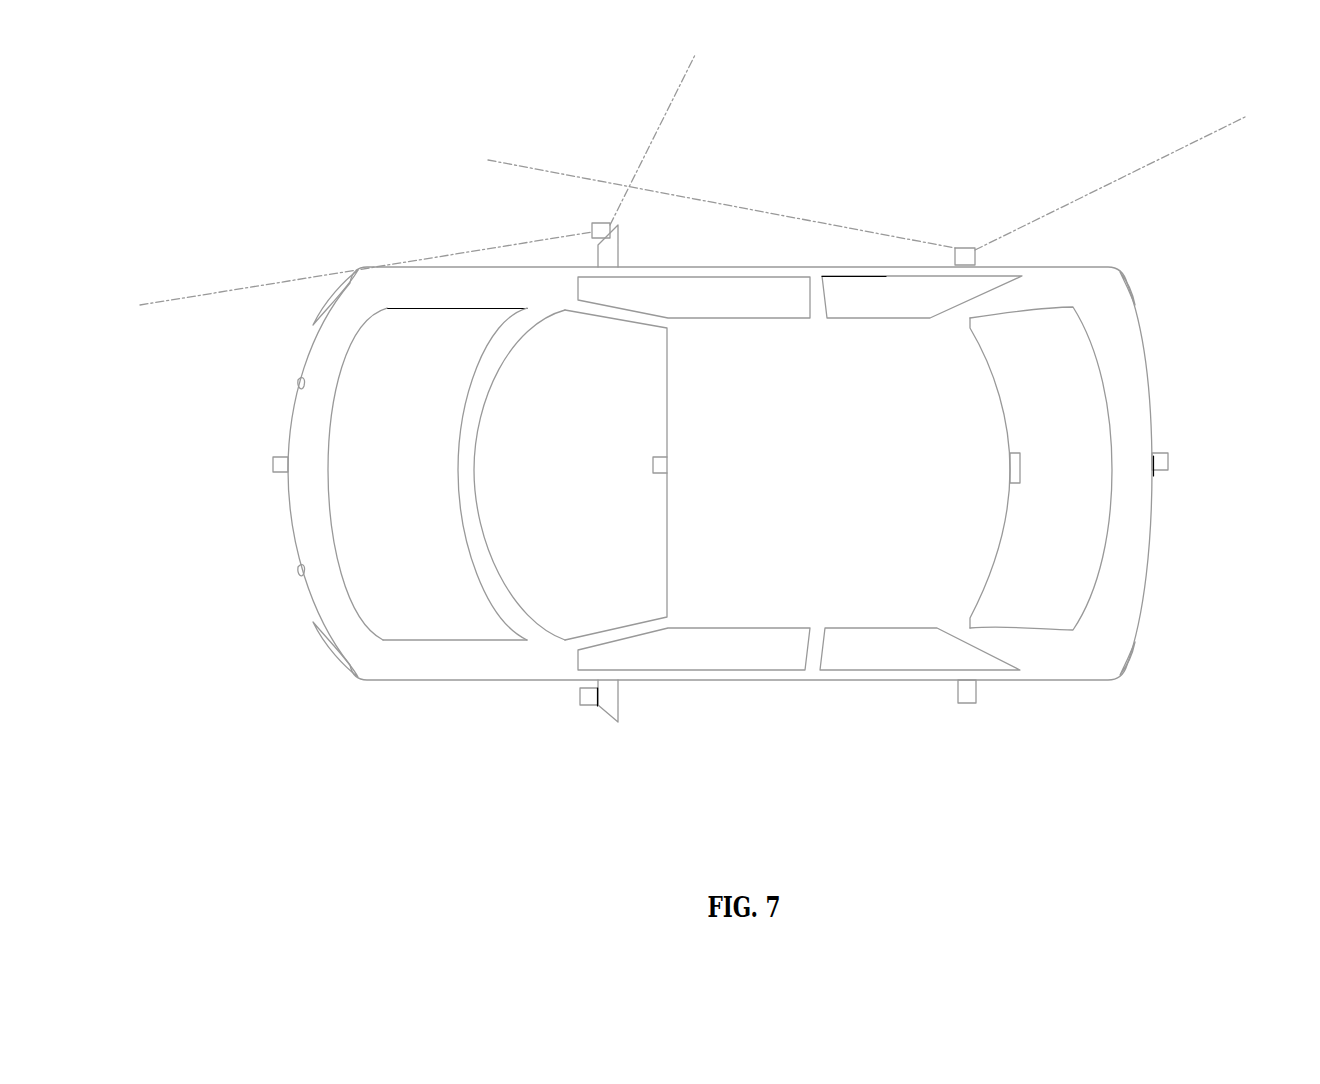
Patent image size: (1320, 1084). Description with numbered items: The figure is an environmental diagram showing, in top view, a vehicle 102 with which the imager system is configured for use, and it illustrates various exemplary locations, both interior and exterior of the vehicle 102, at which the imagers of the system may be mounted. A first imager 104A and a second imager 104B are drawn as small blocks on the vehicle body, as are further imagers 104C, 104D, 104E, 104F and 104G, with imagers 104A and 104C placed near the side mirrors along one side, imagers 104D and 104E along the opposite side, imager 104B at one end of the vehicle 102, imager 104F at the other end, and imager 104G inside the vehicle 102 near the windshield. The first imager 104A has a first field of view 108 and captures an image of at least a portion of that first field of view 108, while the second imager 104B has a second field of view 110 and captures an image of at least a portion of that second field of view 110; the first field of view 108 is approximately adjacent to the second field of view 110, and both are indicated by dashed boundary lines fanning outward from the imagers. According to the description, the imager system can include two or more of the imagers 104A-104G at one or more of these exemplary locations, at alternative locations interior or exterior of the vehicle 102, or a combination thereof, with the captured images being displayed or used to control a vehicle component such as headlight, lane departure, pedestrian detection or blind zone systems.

The vehicle 102 is at (810, 262).
The first imager 104A is at (950, 266).
The second imager 104B is at (1168, 462).
The imager 104C is at (592, 238).
The imager 104D is at (968, 703).
The imager 104E is at (582, 705).
The imager 104F is at (273, 464).
The imager 104G is at (655, 472).
The first field of view 108 is at (642, 147).
The second field of view 110 is at (878, 212).